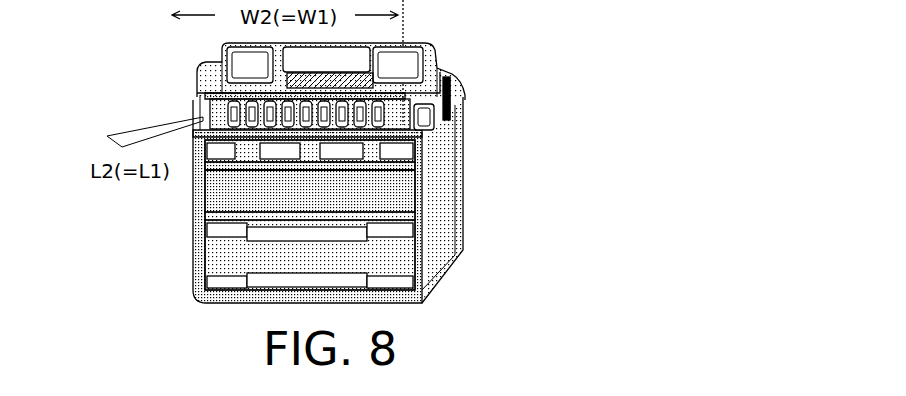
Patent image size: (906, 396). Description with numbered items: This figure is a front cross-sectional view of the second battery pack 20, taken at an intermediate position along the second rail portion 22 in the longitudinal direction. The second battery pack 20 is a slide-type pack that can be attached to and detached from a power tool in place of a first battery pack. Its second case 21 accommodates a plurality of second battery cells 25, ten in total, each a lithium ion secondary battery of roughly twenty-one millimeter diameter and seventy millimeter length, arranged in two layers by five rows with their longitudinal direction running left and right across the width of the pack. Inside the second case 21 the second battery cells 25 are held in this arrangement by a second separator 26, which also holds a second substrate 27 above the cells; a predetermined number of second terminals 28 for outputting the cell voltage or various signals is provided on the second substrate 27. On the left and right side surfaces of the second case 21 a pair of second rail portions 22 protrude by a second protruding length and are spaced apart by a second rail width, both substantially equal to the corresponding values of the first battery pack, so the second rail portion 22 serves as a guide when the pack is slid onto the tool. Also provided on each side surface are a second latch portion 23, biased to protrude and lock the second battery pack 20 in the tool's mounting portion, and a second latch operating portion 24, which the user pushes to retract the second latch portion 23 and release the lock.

The second battery pack 20 is at (603, 312).
The second case 21 is at (455, 232).
The second rail portion 22 is at (205, 108).
The second latch portion 23 is at (420, 133).
The second latch operating portion 24 is at (200, 80).
The second battery cell 25 is at (230, 255).
The second separator 26 is at (280, 158).
The second substrate 27 is at (267, 138).
The second terminal 28 is at (232, 90).